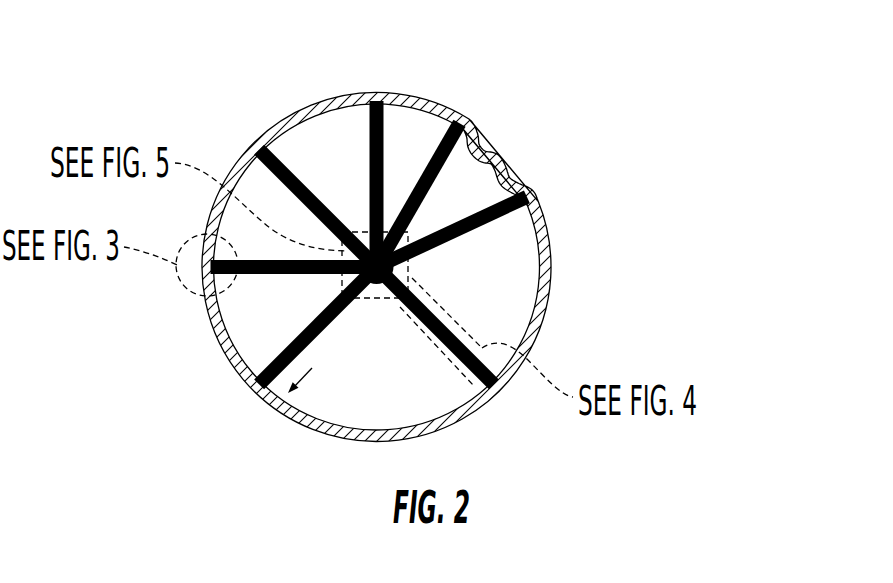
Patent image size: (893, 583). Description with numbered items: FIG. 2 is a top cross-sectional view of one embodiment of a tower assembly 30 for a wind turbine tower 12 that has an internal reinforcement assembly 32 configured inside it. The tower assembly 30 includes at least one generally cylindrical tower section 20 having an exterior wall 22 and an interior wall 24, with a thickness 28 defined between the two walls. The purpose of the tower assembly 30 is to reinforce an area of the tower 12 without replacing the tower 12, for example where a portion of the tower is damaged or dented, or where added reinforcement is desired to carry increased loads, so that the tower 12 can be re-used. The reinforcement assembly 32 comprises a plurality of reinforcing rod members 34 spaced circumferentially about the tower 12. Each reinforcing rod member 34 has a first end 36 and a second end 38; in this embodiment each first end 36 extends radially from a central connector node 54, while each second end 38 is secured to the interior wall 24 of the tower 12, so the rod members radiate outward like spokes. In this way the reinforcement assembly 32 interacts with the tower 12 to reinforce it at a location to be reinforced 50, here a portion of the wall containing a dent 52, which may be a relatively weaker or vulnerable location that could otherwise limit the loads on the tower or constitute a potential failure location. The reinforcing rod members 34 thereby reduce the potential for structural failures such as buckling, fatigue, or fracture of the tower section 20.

The wind turbine tower 12 is at (605, 334).
The tower section 20 is at (557, 200).
The exterior wall 22 is at (405, 93).
The interior wall 24 is at (418, 118).
The thickness 28 is at (266, 419).
The tower assembly 30 is at (748, 133).
The reinforcement assembly 32 is at (258, 308).
The reinforcing rod members 34 is at (369, 203).
The first end 36 is at (386, 226).
The second end 38 is at (401, 112).
The location to be reinforced 50 is at (524, 116).
The dent 52 is at (498, 165).
The connector node 54 is at (373, 287).